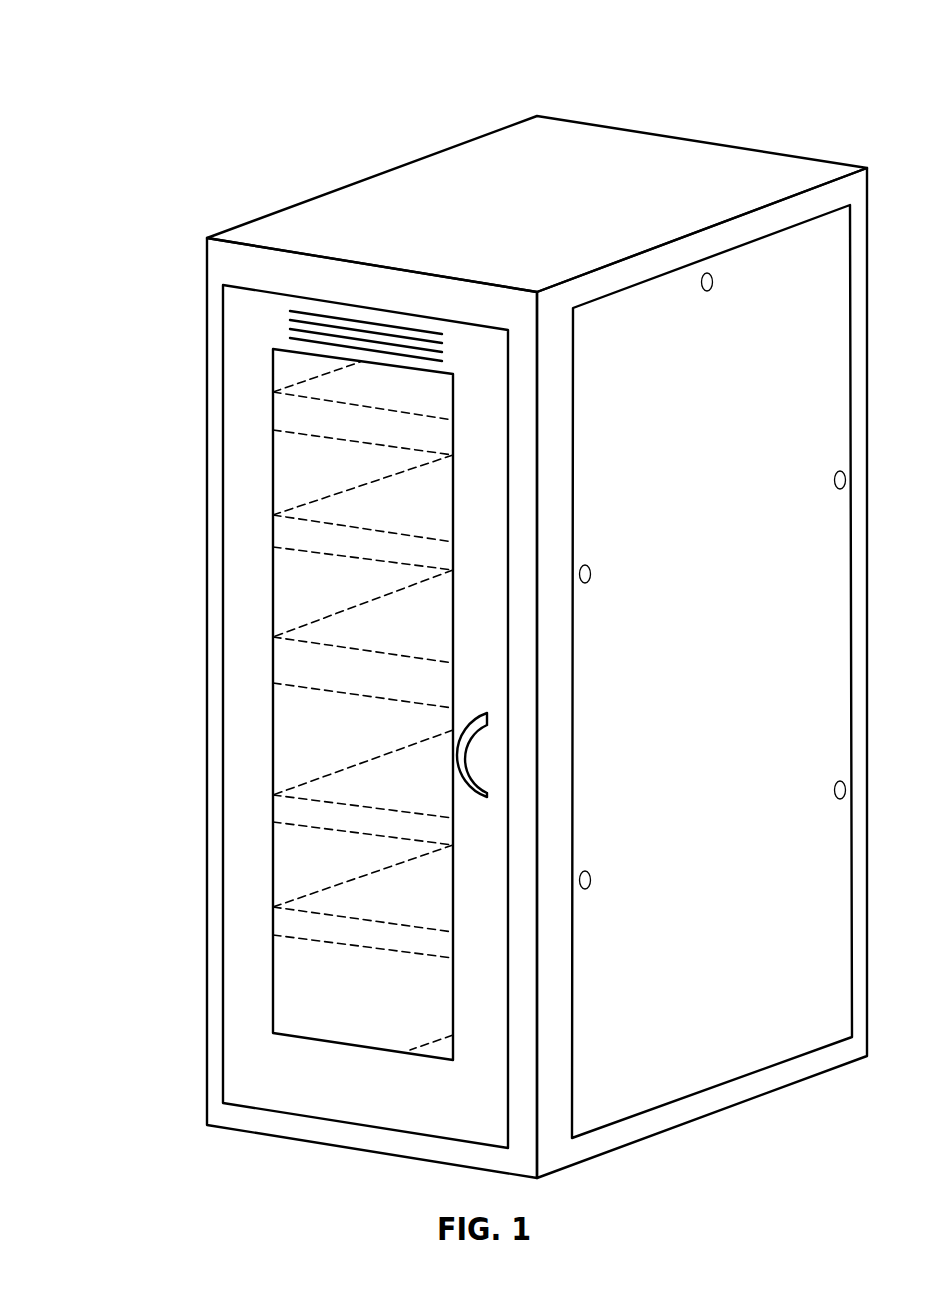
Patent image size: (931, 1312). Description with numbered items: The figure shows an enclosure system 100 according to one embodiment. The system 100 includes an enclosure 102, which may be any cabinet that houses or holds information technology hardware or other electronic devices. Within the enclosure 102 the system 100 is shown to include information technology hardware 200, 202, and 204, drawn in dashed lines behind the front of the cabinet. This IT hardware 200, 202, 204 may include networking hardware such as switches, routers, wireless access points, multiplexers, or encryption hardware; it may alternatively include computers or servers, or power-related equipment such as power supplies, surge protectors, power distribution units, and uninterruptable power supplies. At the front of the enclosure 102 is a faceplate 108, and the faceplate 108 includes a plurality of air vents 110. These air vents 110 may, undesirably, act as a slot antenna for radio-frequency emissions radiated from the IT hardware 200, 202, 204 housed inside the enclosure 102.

The system 100 is at (633, 88).
The enclosure 102 is at (415, 222).
The faceplate 108 is at (272, 325).
The air vents 110 is at (307, 317).
The information technology hardware 200 is at (338, 383).
The information technology hardware 202 is at (320, 628).
The information technology hardware 204 is at (355, 910).